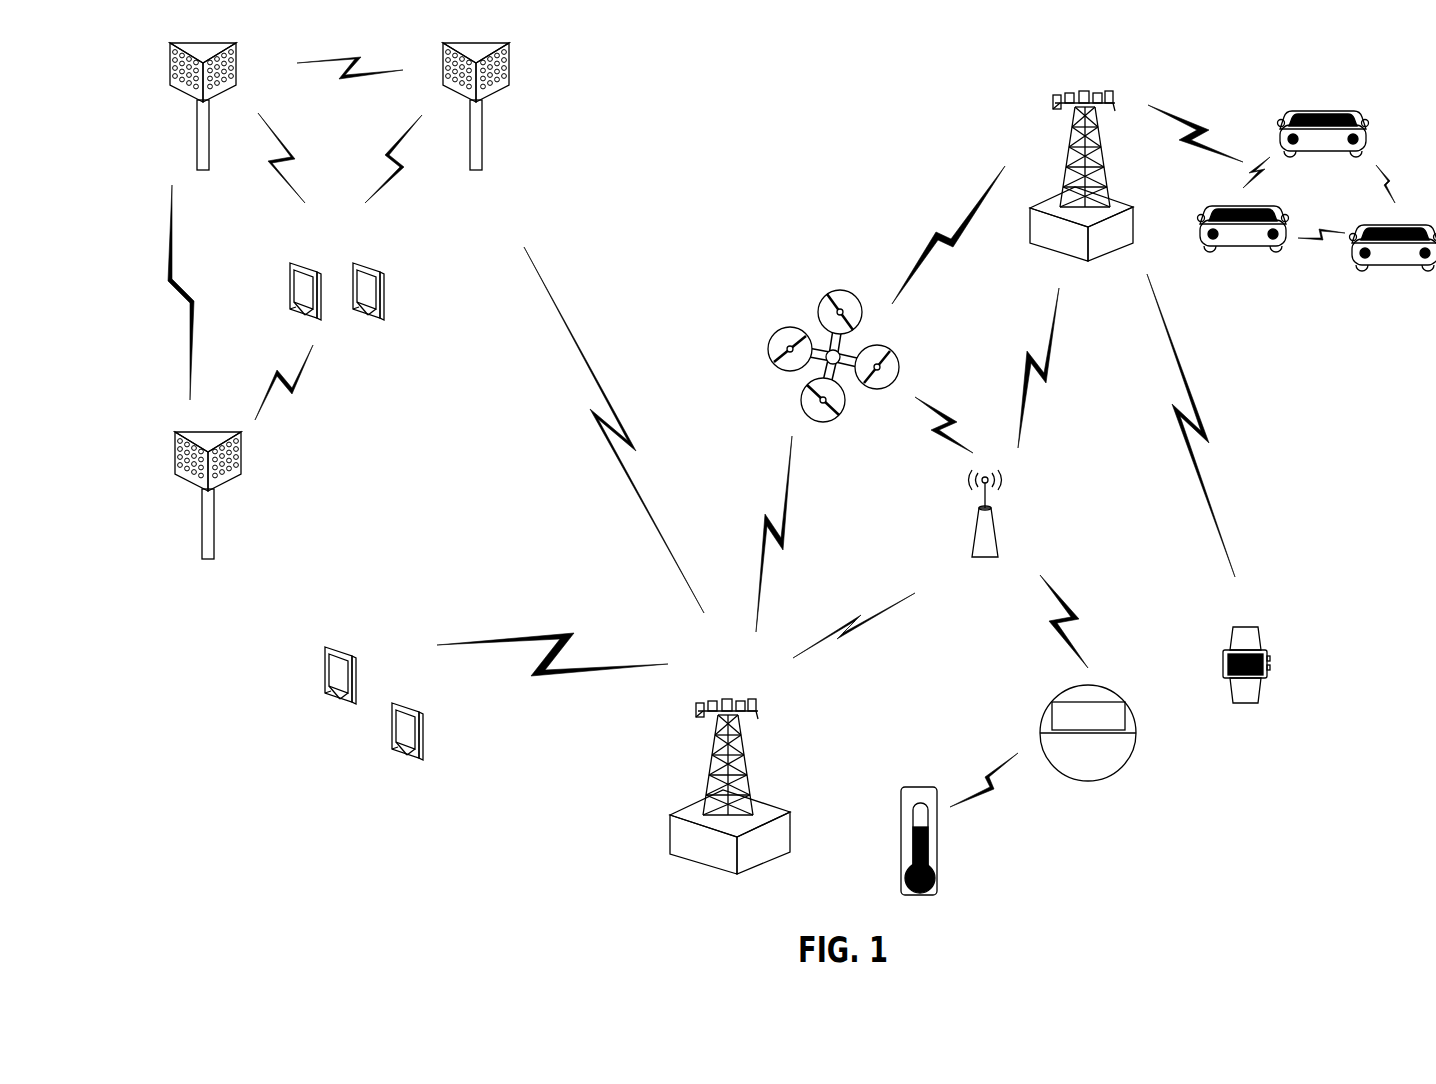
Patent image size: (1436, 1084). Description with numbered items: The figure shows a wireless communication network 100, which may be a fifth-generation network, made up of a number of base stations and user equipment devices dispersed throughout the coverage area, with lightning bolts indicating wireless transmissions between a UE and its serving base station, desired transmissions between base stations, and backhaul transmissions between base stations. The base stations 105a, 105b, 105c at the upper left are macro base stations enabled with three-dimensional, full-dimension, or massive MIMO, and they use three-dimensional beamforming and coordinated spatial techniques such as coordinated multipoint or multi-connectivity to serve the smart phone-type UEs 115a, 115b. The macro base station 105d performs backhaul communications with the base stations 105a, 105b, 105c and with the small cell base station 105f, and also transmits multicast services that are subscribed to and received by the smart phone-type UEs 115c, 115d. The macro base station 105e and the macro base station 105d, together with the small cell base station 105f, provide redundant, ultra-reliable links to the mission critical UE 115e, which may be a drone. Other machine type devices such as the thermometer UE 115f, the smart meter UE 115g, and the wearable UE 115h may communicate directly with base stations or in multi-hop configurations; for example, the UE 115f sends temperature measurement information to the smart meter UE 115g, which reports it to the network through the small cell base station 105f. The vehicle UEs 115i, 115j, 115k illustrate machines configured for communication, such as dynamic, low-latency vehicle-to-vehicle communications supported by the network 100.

The wireless communication network 100 is at (767, 204).
The base station 105a is at (197, 146).
The base station 105b is at (483, 148).
The base station 105c is at (202, 548).
The macro base station 105d is at (690, 860).
The macro base station 105e is at (1050, 250).
The small cell base station 105f is at (970, 548).
The UE 115a is at (290, 277).
The UE 115b is at (384, 283).
The UE 115c is at (327, 658).
The UE 115d is at (423, 717).
The UE 115e is at (770, 352).
The UE 115f is at (937, 887).
The UE 115g is at (1110, 778).
The UE 115h is at (1260, 693).
The UE 115i is at (1340, 105).
The UE 115j is at (1417, 273).
The UE 115k is at (1217, 250).